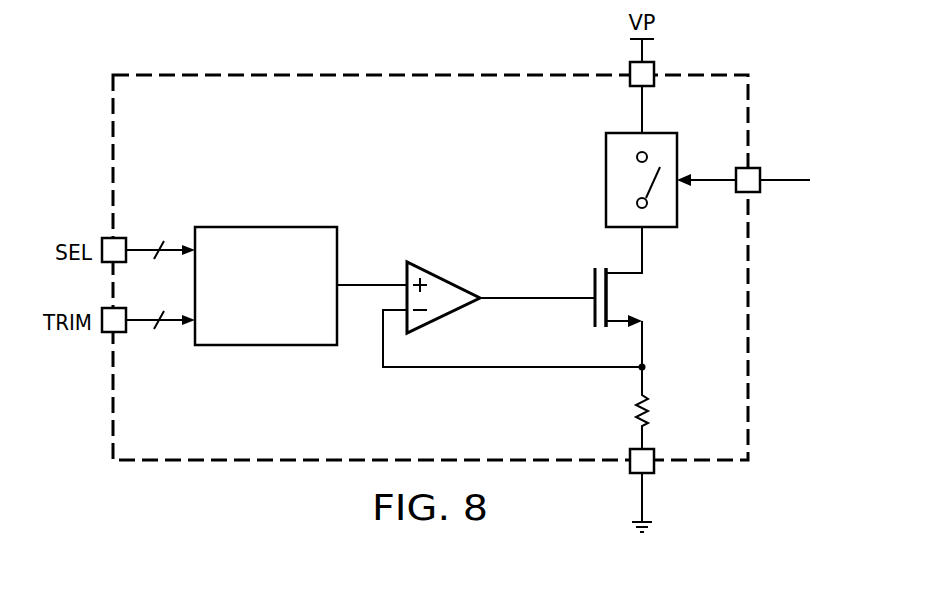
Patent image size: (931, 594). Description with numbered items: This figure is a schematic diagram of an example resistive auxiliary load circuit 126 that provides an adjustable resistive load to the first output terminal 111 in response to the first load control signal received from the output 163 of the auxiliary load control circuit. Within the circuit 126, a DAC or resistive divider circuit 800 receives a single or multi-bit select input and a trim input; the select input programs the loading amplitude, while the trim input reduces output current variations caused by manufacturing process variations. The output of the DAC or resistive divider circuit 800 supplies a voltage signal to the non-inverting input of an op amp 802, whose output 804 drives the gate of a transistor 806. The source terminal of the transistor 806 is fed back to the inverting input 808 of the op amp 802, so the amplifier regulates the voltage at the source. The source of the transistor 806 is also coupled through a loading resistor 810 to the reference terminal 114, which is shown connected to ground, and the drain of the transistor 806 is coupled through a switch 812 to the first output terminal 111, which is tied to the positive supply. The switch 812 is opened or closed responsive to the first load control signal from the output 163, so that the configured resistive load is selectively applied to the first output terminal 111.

The resistive auxiliary load circuit 126 is at (398, 66).
The DAC or resistive divider circuit 800 is at (265, 227).
The op amp 802 is at (443, 277).
The output 804 is at (537, 300).
The transistor 806 is at (595, 283).
The inverting input 808 is at (515, 372).
The loading resistor 810 is at (647, 410).
The switch 812 is at (606, 175).
The first output terminal 111 is at (645, 108).
The reference terminal 114 is at (645, 495).
The output 163 is at (781, 178).